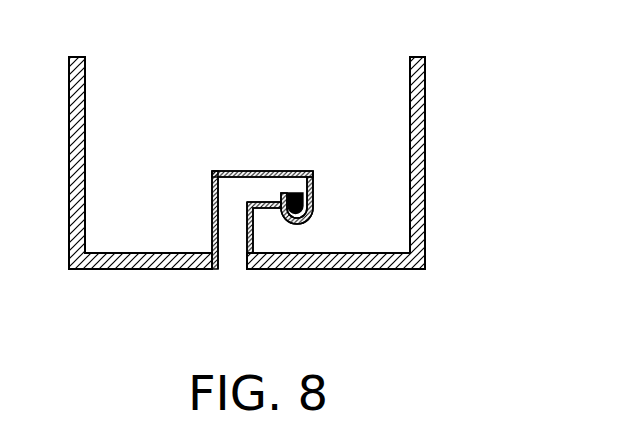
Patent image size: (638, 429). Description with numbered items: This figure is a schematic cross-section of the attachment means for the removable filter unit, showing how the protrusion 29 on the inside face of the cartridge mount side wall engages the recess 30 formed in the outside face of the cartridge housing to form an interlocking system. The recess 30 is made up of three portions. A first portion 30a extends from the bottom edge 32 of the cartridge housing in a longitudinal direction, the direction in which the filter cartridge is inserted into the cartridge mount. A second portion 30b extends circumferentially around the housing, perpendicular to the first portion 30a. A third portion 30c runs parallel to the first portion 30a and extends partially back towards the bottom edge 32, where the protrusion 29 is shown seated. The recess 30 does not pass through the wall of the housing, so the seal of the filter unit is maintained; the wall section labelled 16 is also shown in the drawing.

The housing wall 16 is at (427, 90).
The bottom edge 32 is at (110, 269).
The recess 30 is at (263, 222).
The first portion 30a is at (233, 228).
The second portion 30b is at (263, 188).
The third portion 30c is at (300, 183).
The protrusion 29 is at (300, 203).